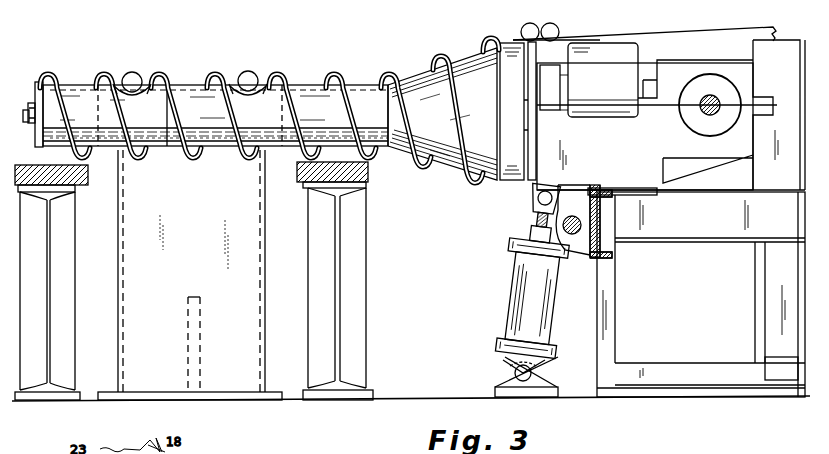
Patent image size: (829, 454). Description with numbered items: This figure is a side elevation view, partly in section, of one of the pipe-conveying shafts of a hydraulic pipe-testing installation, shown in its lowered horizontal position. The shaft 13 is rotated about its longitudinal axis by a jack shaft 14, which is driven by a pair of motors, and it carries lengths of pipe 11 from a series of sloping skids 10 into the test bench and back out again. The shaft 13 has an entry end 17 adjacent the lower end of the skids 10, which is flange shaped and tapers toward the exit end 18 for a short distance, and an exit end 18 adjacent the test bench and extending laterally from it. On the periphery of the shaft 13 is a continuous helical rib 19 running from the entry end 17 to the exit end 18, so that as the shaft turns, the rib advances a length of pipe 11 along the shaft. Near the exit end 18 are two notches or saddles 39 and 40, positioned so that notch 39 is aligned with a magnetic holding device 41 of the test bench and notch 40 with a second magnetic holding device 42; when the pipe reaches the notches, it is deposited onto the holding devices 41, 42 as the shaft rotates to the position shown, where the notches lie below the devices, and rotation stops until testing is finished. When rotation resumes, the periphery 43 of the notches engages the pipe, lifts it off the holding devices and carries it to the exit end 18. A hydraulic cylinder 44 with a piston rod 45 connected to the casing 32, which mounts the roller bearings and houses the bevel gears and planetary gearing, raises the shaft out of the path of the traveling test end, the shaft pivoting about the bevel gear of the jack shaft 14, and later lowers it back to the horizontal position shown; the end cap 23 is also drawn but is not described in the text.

The skids 10 is at (692, 36).
The lengths of pipe 11 is at (133, 72).
The shaft 13 is at (352, 82).
The jack shaft 14 is at (699, 110).
The entry end 17 is at (480, 56).
The exit end 18 is at (48, 149).
The helical rib 19 is at (390, 78).
The end cap bolt 23 is at (25, 116).
The casing 32 is at (528, 197).
The notch 39 is at (120, 82).
The notch 40 is at (232, 82).
The magnetic holding device 41 is at (143, 80).
The second magnetic holding device 42 is at (262, 85).
The periphery of the notches 43 is at (143, 95).
The hydraulic cylinder 44 is at (514, 295).
The piston rod 45 is at (519, 226).